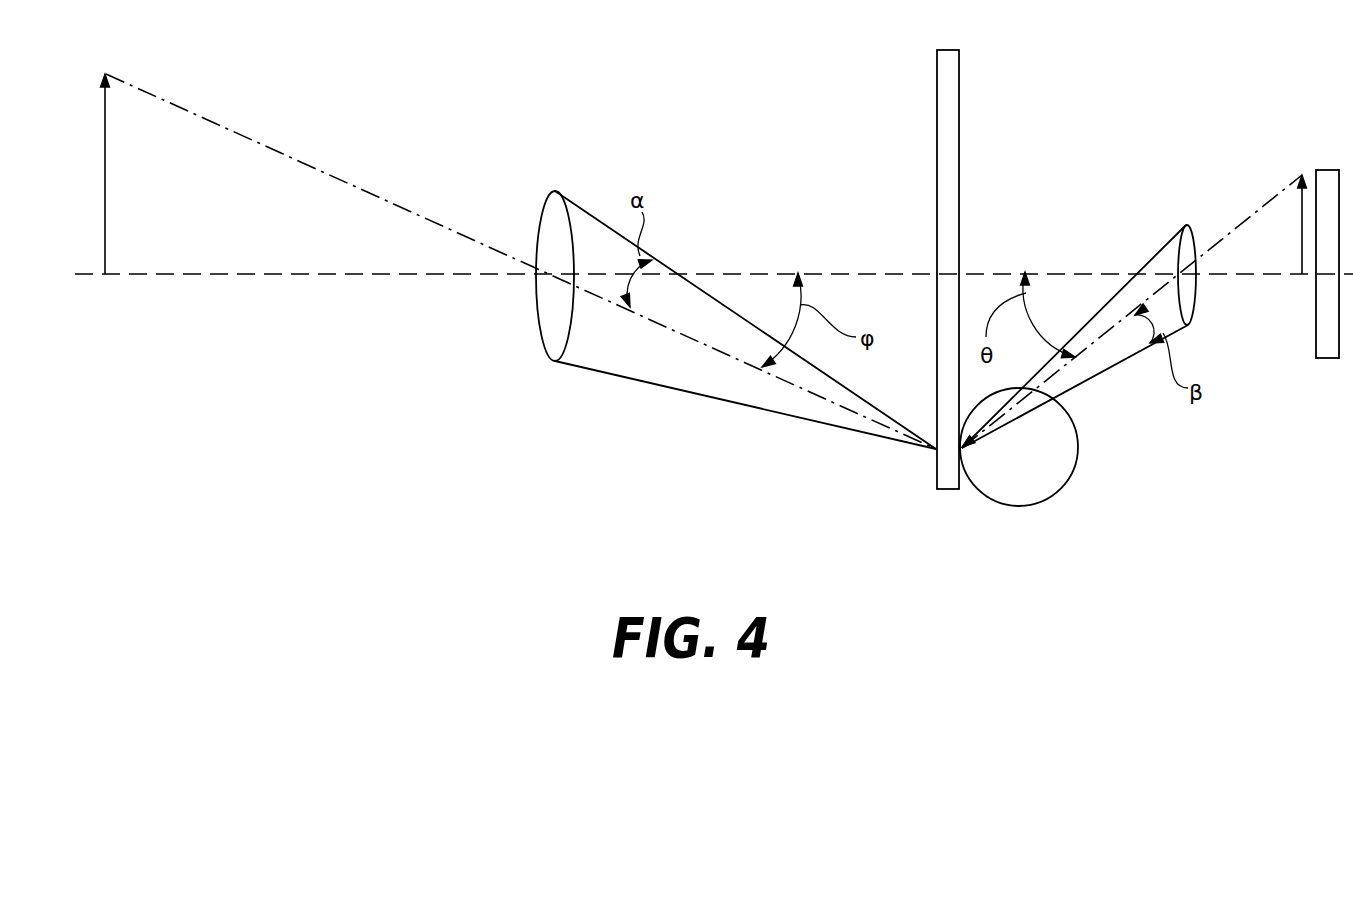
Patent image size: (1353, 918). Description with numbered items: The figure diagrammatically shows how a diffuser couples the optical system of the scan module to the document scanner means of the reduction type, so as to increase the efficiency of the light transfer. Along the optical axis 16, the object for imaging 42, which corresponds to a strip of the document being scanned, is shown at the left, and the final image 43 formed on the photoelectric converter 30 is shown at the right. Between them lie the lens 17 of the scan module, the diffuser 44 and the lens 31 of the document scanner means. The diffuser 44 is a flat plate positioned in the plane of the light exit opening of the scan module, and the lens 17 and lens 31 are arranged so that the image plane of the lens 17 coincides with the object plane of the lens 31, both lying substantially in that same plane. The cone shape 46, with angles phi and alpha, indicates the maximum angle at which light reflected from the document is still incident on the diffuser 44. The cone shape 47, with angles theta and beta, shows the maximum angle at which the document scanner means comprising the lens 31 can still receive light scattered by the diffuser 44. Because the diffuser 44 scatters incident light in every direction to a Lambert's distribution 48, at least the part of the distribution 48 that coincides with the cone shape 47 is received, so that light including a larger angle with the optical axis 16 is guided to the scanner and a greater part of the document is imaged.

The optical axis 16 is at (212, 274).
The lens of the scan module 17 is at (538, 313).
The photoelectric converter 30 is at (1314, 318).
The lens of the document scanner means 31 is at (1197, 293).
The object for imaging 42 is at (105, 157).
The final image 43 is at (1300, 248).
The diffuser 44 is at (959, 130).
The cone shape 46 is at (820, 423).
The cone shape 47 is at (1157, 247).
The Lambert's distribution 48 is at (1053, 495).